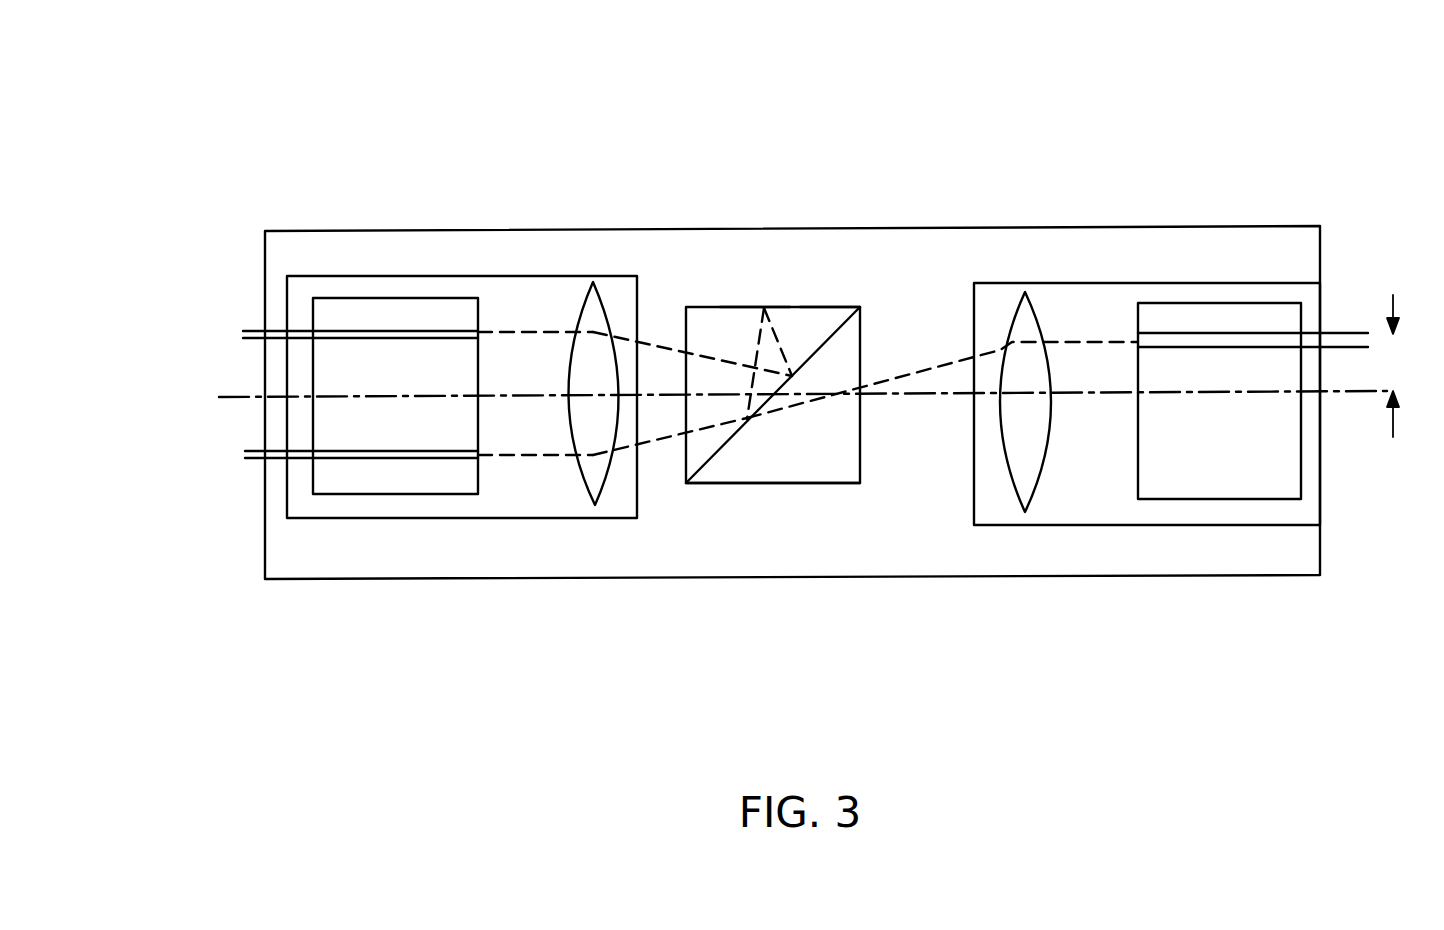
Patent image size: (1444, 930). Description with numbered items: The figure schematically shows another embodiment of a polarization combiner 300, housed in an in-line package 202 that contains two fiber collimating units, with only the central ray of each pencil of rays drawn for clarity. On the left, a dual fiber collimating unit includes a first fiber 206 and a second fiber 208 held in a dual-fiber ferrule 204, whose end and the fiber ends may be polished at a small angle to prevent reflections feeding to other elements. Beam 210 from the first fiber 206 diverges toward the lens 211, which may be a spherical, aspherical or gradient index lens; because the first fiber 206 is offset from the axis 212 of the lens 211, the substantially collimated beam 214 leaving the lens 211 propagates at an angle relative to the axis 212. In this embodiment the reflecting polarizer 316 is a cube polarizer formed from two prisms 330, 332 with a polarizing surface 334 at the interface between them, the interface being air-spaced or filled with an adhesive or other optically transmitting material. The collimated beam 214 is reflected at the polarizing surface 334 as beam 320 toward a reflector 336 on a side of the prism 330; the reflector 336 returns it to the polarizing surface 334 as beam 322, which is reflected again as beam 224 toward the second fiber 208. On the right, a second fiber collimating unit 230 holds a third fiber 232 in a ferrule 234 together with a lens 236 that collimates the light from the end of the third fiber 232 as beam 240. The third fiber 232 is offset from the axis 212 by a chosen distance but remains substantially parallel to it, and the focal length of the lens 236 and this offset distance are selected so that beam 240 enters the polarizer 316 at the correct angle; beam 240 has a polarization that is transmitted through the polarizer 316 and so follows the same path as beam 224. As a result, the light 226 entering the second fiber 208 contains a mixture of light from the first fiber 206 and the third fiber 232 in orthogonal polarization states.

The combiner 300 is at (762, 350).
The in-line package 202 is at (1208, 223).
The dual-fiber ferrule 204 is at (345, 498).
The first fiber 206 is at (257, 329).
The second fiber 208 is at (255, 465).
The beam 210 is at (533, 332).
The lens 211 is at (595, 280).
The axis 212 is at (231, 398).
The beam 214 is at (660, 352).
The beam 224 is at (665, 438).
The light 226 is at (532, 457).
The second fiber collimating unit 230 is at (1140, 280).
The third fiber 232 is at (1358, 332).
The ferrule 234 is at (1273, 280).
The lens 236 is at (1037, 493).
The beam 240 is at (925, 368).
The reflecting polarizer 316 is at (828, 307).
The beam 320 is at (775, 330).
The beam 322 is at (757, 340).
The prism 330 is at (838, 307).
The prism 332 is at (822, 483).
The polarizing surface 334 is at (712, 458).
The reflector 336 is at (755, 305).